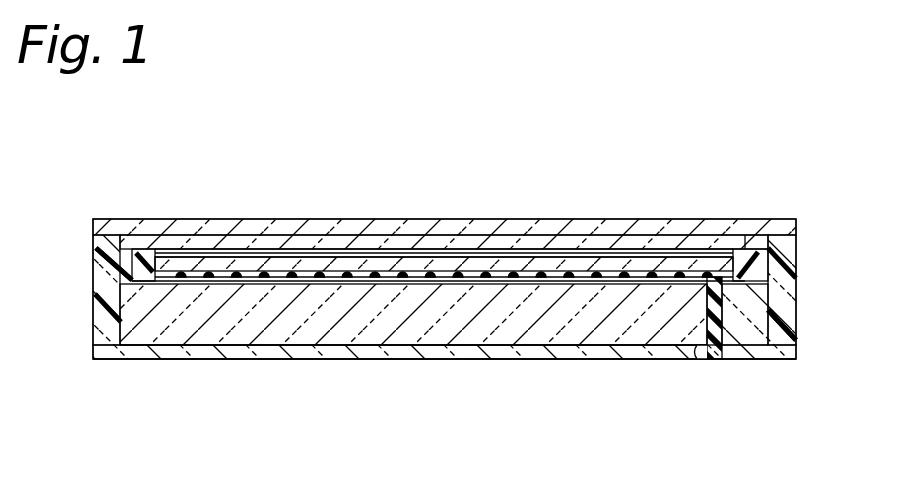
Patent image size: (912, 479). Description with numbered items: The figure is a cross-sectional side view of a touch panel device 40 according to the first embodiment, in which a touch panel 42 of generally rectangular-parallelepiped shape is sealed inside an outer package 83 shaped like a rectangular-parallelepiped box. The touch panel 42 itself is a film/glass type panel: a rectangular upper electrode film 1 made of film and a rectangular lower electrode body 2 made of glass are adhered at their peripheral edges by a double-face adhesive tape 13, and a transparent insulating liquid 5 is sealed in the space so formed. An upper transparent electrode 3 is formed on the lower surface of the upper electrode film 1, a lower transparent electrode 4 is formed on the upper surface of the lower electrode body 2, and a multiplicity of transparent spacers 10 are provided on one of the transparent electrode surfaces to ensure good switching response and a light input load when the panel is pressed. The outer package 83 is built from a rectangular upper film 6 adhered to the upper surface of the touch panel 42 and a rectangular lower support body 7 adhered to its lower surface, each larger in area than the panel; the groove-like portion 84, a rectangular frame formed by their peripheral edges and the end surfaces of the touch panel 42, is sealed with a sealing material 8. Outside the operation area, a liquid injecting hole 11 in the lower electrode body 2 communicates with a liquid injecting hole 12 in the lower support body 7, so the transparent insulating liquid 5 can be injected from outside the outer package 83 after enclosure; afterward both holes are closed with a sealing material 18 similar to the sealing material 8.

The upper electrode film 1 is at (676, 228).
The lower electrode body 2 is at (206, 326).
The upper transparent electrode 3 is at (203, 253).
The lower transparent electrode 4 is at (310, 285).
The transparent insulating liquid 5 is at (396, 262).
The upper film 6 is at (345, 242).
The lower support body 7 is at (436, 347).
The sealing material 8 is at (102, 283).
The spacers 10 is at (292, 272).
The liquid injecting hole 11 is at (742, 340).
The liquid injecting hole 12 is at (697, 353).
The double-face adhesive tape 13 is at (155, 256).
The sealing material 18 is at (714, 359).
The touch panel device 40 is at (796, 215).
The touch panel 42 is at (491, 326).
The outer package 83 is at (557, 359).
The groove-like portion 84 is at (121, 300).